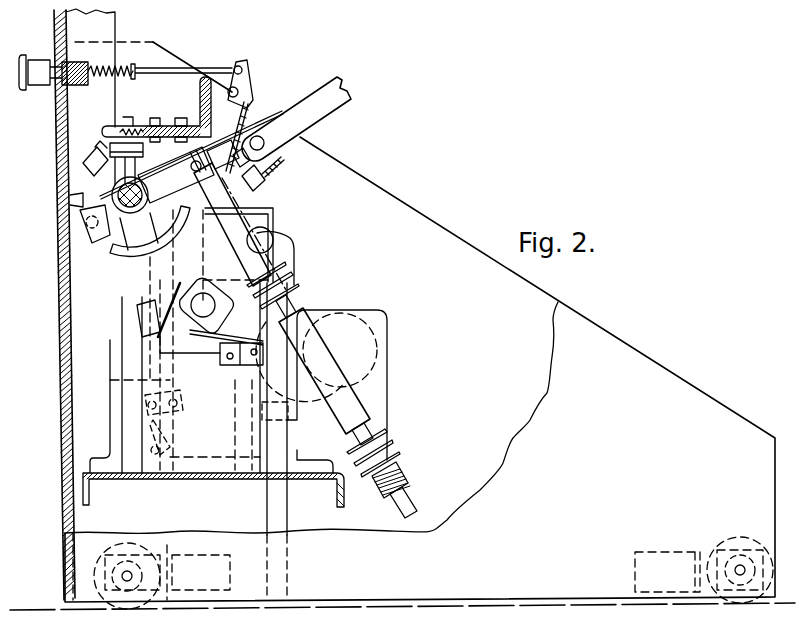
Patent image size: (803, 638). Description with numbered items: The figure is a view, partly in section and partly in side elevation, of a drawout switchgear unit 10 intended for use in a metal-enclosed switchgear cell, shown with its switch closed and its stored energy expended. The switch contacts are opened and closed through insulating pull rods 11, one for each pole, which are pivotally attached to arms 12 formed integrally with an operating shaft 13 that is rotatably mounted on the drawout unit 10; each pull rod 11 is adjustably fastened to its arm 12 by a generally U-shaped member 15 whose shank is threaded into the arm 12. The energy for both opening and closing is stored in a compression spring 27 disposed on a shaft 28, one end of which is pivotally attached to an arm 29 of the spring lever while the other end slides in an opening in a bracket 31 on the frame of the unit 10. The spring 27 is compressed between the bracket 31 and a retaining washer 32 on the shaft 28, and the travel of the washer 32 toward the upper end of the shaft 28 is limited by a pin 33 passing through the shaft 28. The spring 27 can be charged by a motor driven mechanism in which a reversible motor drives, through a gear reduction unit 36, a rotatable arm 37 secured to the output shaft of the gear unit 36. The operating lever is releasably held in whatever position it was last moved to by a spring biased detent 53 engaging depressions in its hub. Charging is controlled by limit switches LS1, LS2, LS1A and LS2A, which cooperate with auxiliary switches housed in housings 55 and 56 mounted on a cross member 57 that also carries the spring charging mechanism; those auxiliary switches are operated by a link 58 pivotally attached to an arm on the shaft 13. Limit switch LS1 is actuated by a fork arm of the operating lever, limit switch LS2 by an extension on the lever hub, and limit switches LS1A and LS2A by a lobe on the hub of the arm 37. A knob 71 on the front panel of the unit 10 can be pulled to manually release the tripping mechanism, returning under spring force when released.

The drawout unit 10 is at (413, 300).
The insulating pull rod 11 is at (320, 89).
The arm 12 is at (168, 107).
The operating shaft 13 is at (112, 193).
The U-shaped member 15 is at (247, 108).
The compression spring 27 is at (303, 293).
The shaft 28 is at (324, 371).
The arm 29 is at (162, 138).
The bracket 31 is at (398, 442).
The retaining washer 32 is at (294, 268).
The pin 33 is at (288, 268).
The gear reduction unit 36 is at (122, 346).
The rotatable arm 37 is at (263, 207).
The spring biased detent 53 is at (133, 121).
The housing 55 is at (110, 380).
The housing 56 is at (112, 433).
The cross member 57 is at (318, 480).
The link 58 is at (137, 363).
The knob 71 is at (43, 63).
The limit switch LS1 is at (265, 182).
The limit switch LS1A is at (153, 297).
The limit switch LS2 is at (82, 163).
The limit switch LS2A is at (230, 367).